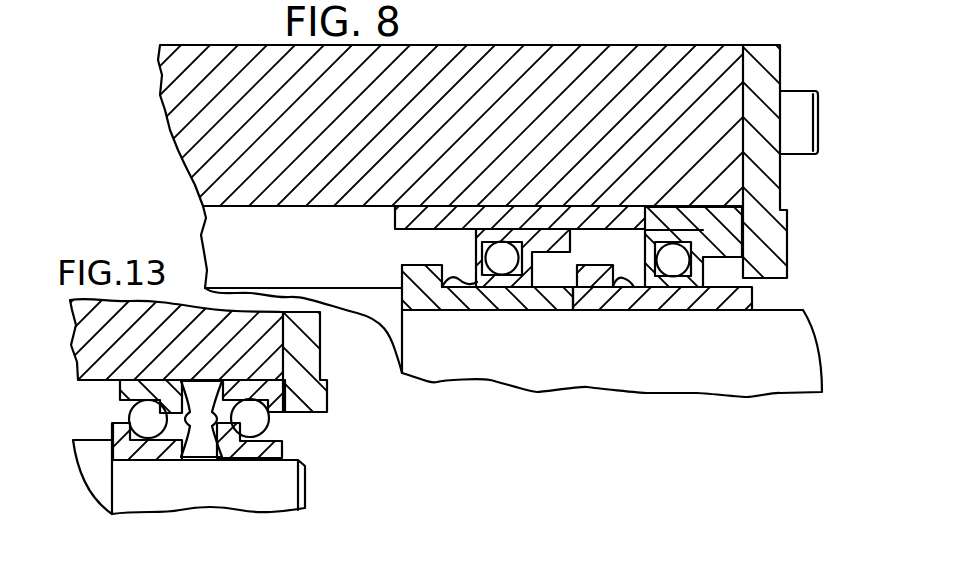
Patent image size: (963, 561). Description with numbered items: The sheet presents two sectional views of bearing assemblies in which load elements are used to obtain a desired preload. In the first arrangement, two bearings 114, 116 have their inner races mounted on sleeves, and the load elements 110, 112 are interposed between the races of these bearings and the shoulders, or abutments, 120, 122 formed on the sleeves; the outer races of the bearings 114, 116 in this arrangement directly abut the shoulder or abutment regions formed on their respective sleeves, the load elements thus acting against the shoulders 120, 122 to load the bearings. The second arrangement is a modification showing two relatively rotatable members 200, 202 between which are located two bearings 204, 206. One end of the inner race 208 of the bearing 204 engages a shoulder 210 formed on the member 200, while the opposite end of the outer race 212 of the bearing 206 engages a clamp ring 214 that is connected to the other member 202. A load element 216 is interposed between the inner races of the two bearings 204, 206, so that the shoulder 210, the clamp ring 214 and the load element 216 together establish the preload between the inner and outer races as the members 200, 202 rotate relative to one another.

In FIG. 8, the load element 110 is at (462, 288).
In FIG. 8, the load element 112 is at (623, 288).
In FIG. 8, the bearing 114 is at (508, 288).
In FIG. 8, the bearing 116 is at (678, 272).
In FIG. 8, the shoulder 120 is at (402, 283).
In FIG. 8, the shoulder 122 is at (630, 266).
In FIG. 13, the relatively rotatable member 200 is at (292, 493).
In FIG. 13, the relatively rotatable member 202 is at (278, 350).
In FIG. 13, the bearing 204 is at (122, 408).
In FIG. 13, the bearing 206 is at (286, 427).
In FIG. 13, the inner race 208 is at (230, 432).
In FIG. 13, the shoulder 210 is at (117, 472).
In FIG. 13, the outer race 212 is at (278, 403).
In FIG. 13, the clamp ring 214 is at (318, 388).
In FIG. 13, the load element 216 is at (200, 458).